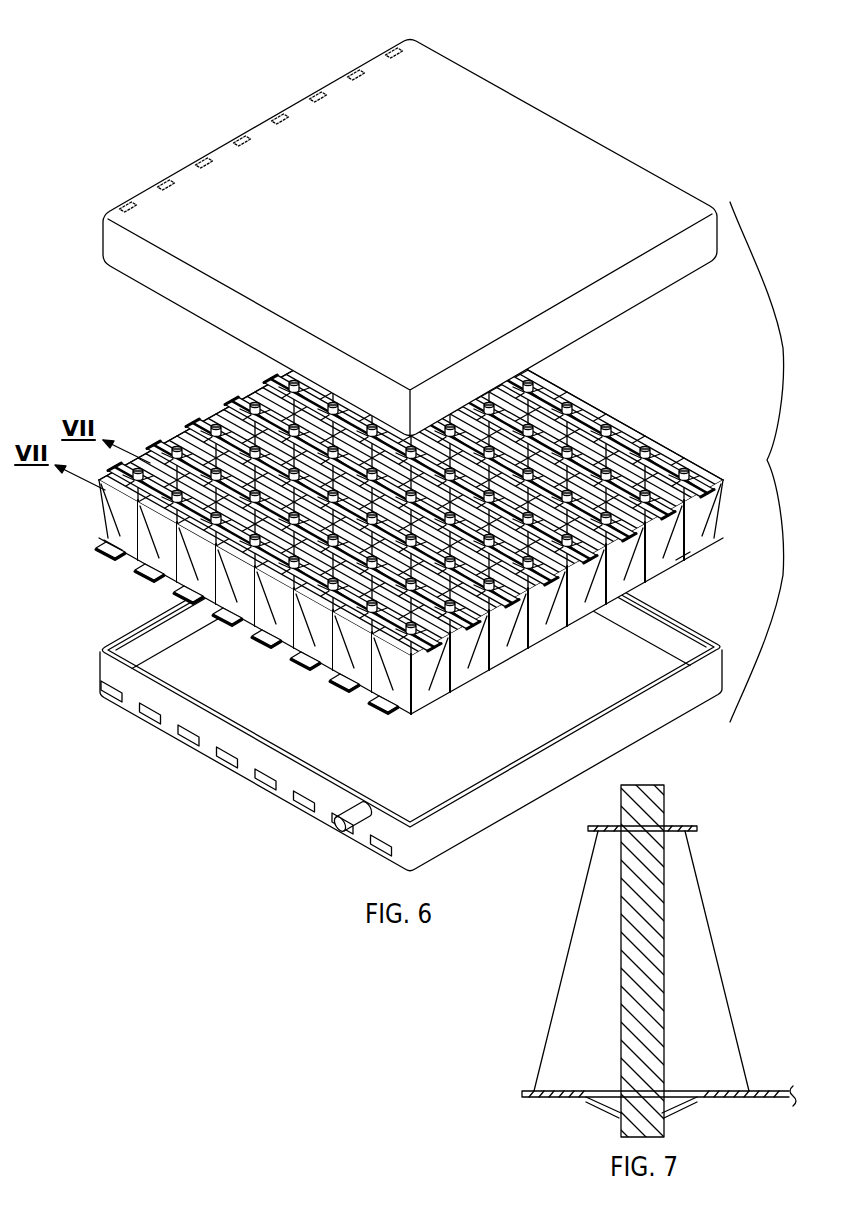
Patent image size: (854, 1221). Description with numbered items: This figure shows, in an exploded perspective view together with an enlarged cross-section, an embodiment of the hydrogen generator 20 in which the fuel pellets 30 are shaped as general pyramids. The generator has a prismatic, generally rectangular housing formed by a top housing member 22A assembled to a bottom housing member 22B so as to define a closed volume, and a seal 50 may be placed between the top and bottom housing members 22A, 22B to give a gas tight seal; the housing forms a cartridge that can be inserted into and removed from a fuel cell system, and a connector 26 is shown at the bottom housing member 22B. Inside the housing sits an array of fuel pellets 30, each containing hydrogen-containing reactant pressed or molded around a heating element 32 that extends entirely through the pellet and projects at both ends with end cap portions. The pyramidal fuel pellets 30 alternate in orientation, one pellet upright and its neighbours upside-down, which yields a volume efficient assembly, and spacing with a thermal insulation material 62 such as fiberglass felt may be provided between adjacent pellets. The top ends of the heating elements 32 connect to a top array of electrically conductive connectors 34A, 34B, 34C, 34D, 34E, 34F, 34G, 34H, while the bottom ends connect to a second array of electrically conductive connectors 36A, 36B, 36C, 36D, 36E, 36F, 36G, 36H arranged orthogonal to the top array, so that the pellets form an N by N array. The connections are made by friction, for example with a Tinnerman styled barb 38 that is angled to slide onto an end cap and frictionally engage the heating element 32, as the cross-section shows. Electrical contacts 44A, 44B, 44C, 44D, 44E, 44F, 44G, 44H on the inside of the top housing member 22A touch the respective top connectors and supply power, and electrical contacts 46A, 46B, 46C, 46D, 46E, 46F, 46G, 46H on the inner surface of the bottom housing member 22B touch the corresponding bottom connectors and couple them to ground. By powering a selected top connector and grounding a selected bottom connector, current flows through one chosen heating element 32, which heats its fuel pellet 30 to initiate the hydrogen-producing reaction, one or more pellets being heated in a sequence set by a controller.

In FIG. 6, the hydrogen generator 20 is at (764, 462).
In FIG. 6, the top housing member 22A is at (522, 133).
In FIG. 6, the bottom housing member 22B is at (480, 807).
In FIG. 6, the connector 26 is at (350, 808).
In FIG. 6, the fuel pellet 30 is at (425, 691).
In FIG. 7, the fuel pellet 30 is at (572, 977).
In FIG. 6, the heating element 32 is at (686, 470).
In FIG. 7, the heating element 32 is at (647, 786).
In FIG. 6, the top electrically conductive connector 34A is at (106, 498).
In FIG. 7, the top electrically conductive connector 34A is at (684, 826).
In FIG. 6, the top electrically conductive connector 34B is at (158, 452).
In FIG. 6, the top electrically conductive connector 34C is at (197, 427).
In FIG. 6, the top electrically conductive connector 34D is at (236, 404).
In FIG. 6, the top electrically conductive connector 34E is at (277, 381).
In FIG. 6, the top electrically conductive connector 34F is at (513, 382).
In FIG. 6, the top electrically conductive connector 34G is at (548, 408).
In FIG. 6, the top electrically conductive connector 34H is at (625, 446).
In FIG. 6, the bottom electrically conductive connector 36A is at (108, 545).
In FIG. 7, the bottom electrically conductive connector 36A is at (528, 1098).
In FIG. 6, the bottom electrically conductive connector 36B is at (146, 568).
In FIG. 6, the bottom electrically conductive connector 36C is at (185, 589).
In FIG. 6, the bottom electrically conductive connector 36D is at (225, 614).
In FIG. 6, the bottom electrically conductive connector 36E is at (268, 634).
In FIG. 6, the bottom electrically conductive connector 36F is at (305, 659).
In FIG. 6, the bottom electrically conductive connector 36G is at (350, 679).
In FIG. 6, the bottom electrically conductive connector 36H is at (385, 702).
In FIG. 6, the Tinnerman styled barb 38 is at (655, 460).
In FIG. 7, the Tinnerman styled barb 38 is at (600, 1108).
In FIG. 6, the electrical contact 44A is at (124, 197).
In FIG. 6, the electrical contact 44B is at (162, 175).
In FIG. 6, the electrical contact 44C is at (200, 153).
In FIG. 6, the electrical contact 44D is at (238, 131).
In FIG. 6, the electrical contact 44E is at (276, 109).
In FIG. 6, the electrical contact 44F is at (314, 87).
In FIG. 6, the electrical contact 44G is at (352, 65).
In FIG. 6, the electrical contact 44H is at (390, 43).
In FIG. 6, the electrical contact 46A is at (98, 694).
In FIG. 6, the electrical contact 46B is at (137, 716).
In FIG. 6, the electrical contact 46C is at (175, 738).
In FIG. 6, the electrical contact 46D is at (213, 760).
In FIG. 6, the electrical contact 46E is at (252, 782).
In FIG. 6, the electrical contact 46F is at (290, 804).
In FIG. 6, the electrical contact 46G is at (327, 824).
In FIG. 6, the electrical contact 46H is at (370, 840).
In FIG. 6, the seal 50 is at (677, 613).
In FIG. 6, the thermal insulation material 62 is at (117, 556).